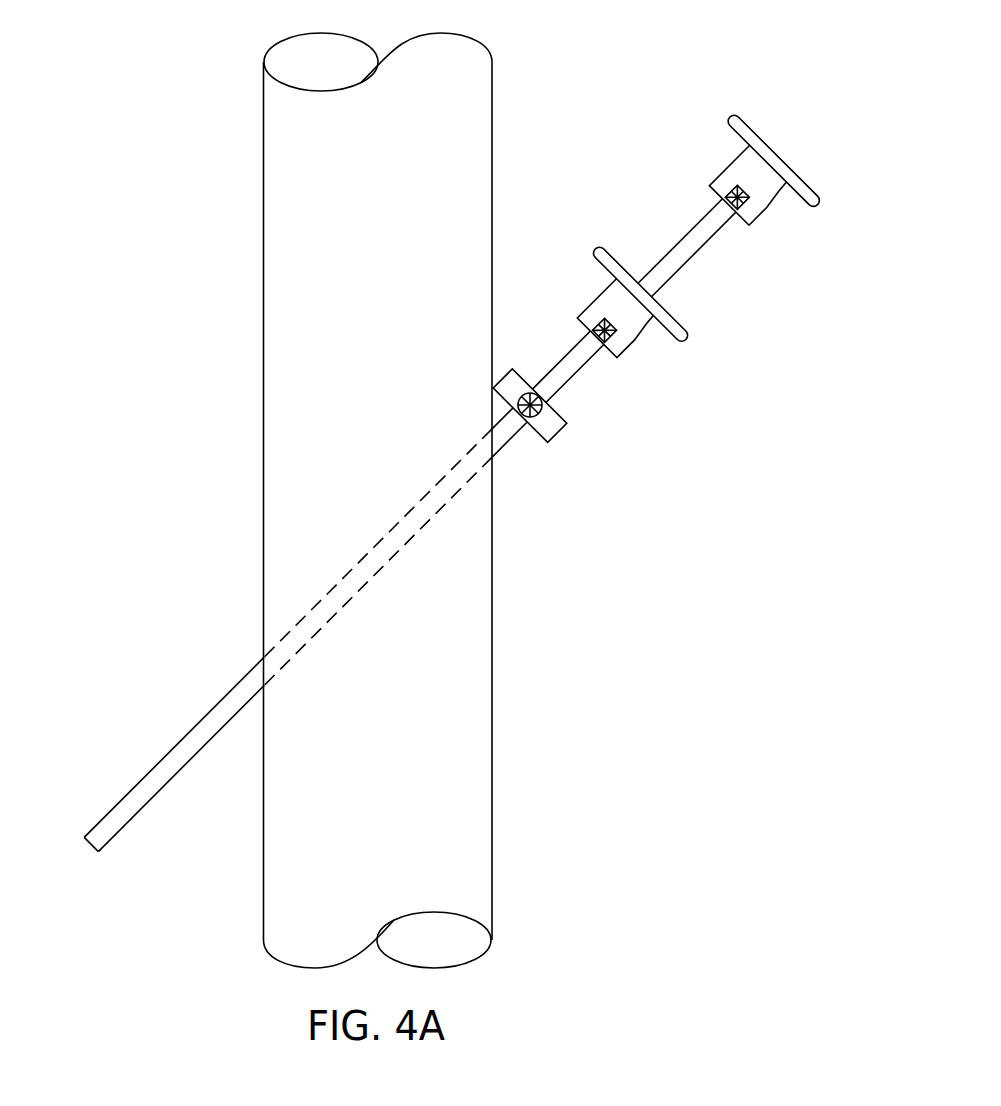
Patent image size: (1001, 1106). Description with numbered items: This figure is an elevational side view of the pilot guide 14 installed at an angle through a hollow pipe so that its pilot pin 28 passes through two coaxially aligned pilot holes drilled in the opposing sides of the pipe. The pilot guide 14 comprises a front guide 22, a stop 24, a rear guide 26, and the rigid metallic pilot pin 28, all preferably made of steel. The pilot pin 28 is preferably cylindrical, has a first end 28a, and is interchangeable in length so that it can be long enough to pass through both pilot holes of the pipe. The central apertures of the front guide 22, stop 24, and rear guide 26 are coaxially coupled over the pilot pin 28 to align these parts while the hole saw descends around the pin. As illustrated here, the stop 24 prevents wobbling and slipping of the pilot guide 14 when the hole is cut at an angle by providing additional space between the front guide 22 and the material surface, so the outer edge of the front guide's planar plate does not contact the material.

The pilot guide 14 is at (648, 168).
The front guide 22 is at (627, 340).
The stop 24 is at (553, 428).
The rear guide 26 is at (762, 208).
The pilot pin 28 is at (207, 715).
The first end 28a is at (85, 843).